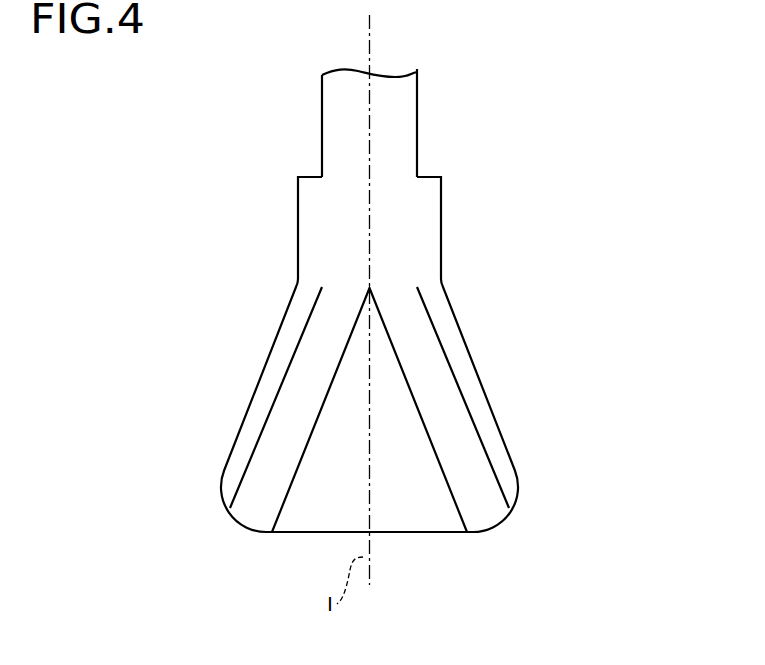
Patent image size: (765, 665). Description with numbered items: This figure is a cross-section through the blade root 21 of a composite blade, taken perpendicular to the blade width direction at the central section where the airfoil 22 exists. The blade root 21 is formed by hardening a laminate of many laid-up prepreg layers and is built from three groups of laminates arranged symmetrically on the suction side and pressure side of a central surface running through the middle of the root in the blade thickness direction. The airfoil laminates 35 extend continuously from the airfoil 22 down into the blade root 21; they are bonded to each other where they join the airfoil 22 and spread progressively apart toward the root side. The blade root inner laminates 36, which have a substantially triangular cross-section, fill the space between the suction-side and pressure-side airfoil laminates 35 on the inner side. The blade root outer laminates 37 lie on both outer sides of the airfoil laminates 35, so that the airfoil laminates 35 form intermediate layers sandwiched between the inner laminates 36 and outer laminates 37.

The blade root 21 is at (473, 341).
The airfoil 22 is at (420, 93).
The airfoil laminates 35 is at (253, 513).
The blade root inner laminates 36 is at (408, 513).
The blade root outer laminates 37 is at (500, 465).